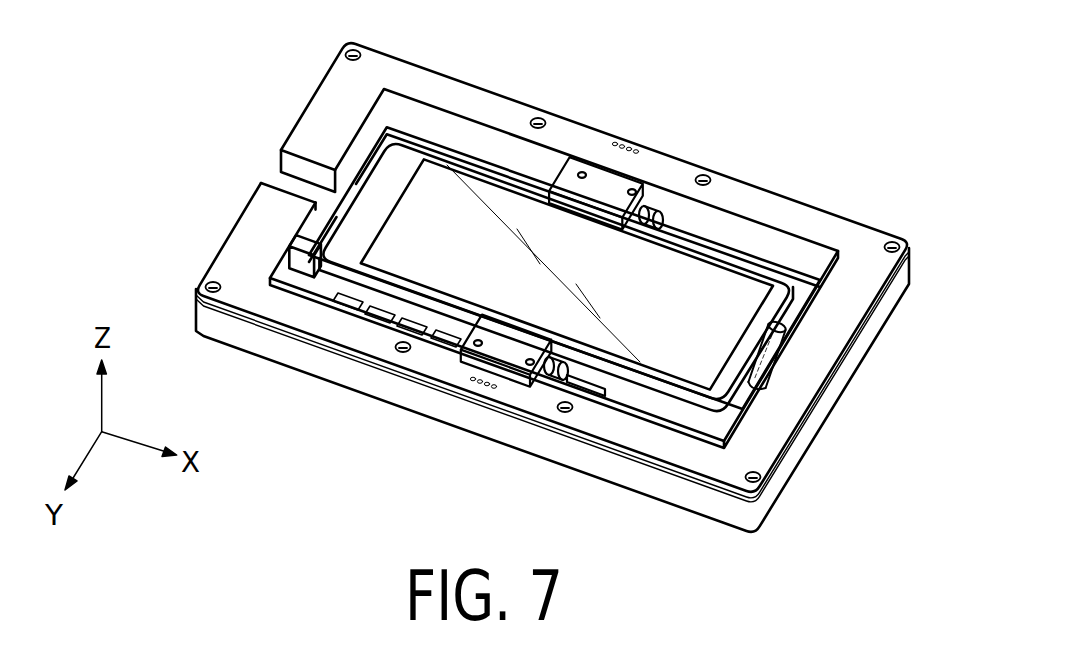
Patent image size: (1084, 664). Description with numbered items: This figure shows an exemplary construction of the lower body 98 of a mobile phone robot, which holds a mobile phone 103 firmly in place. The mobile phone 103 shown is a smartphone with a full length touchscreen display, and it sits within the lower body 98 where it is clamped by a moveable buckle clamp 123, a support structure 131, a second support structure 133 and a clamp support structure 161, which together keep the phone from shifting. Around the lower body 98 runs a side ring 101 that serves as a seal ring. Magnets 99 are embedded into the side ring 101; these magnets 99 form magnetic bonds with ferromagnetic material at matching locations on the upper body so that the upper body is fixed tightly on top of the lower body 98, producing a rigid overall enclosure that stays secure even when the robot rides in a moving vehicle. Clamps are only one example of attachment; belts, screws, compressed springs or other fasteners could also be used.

The lower body 98 is at (270, 345).
The magnets 99 is at (357, 48).
The side ring 101 is at (650, 432).
The mobile phone 103 is at (712, 287).
The moveable buckle clamp 123 is at (772, 350).
The support structure 131 is at (495, 340).
The support structure 133 is at (595, 183).
The clamp support structure 161 is at (337, 200).